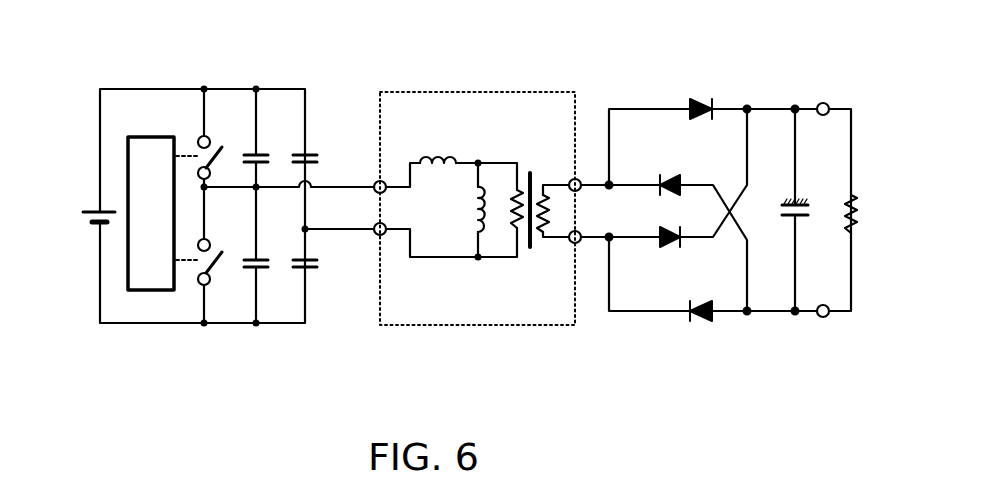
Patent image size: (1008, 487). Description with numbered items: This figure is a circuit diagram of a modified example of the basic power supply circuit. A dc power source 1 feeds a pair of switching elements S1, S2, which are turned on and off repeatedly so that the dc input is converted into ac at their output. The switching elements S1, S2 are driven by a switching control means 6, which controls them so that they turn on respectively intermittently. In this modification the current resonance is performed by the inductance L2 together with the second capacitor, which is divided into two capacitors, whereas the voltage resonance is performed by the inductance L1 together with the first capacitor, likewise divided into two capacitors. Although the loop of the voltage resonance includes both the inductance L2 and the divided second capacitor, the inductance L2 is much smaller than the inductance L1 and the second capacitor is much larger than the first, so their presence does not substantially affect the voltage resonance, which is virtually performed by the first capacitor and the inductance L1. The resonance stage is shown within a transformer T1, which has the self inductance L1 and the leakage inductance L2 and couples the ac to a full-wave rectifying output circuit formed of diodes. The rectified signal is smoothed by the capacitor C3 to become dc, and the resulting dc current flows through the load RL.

The dc power source 1 is at (93, 210).
The switching control means 6 is at (145, 292).
The switching element S1 is at (197, 153).
The switching element S2 is at (217, 258).
The inductance L1 is at (463, 210).
The inductance L2 is at (436, 142).
The transformer T1 is at (481, 235).
The capacitor C3 is at (786, 210).
The load RL is at (870, 214).